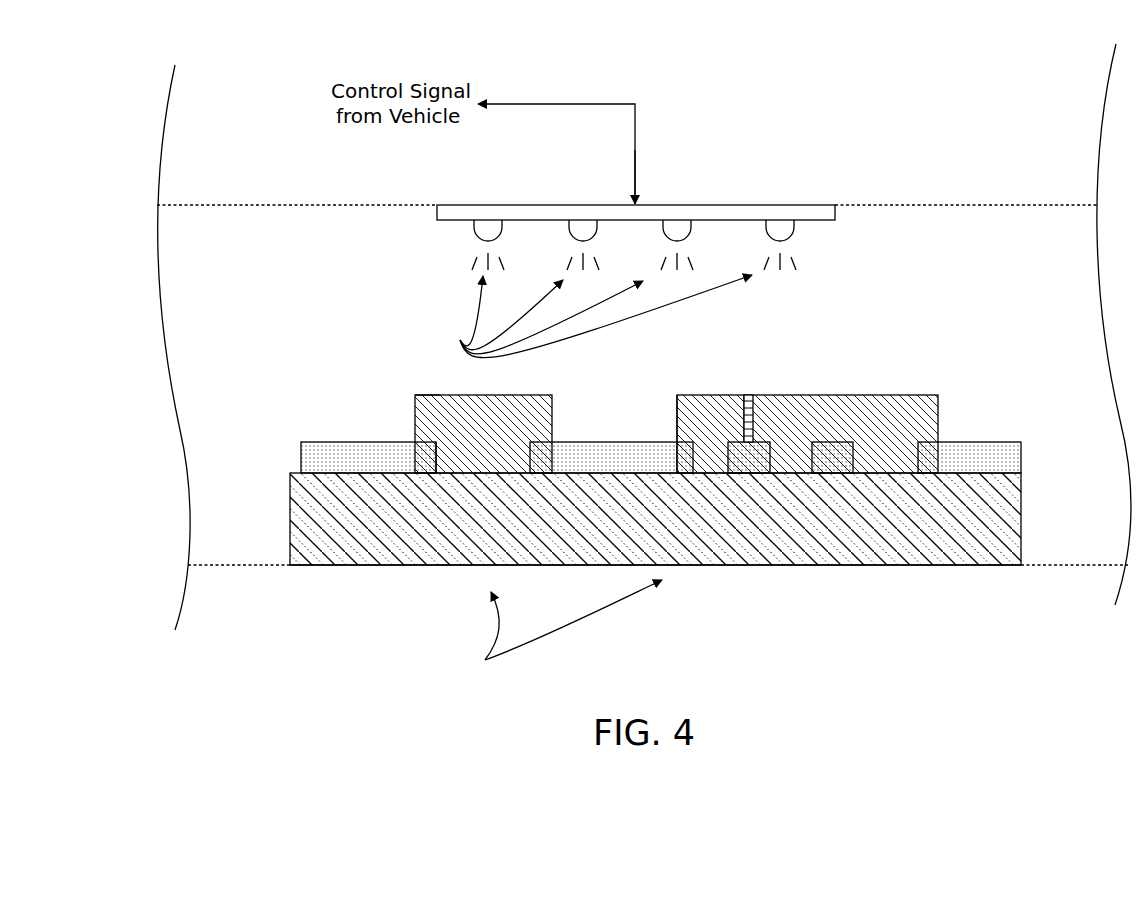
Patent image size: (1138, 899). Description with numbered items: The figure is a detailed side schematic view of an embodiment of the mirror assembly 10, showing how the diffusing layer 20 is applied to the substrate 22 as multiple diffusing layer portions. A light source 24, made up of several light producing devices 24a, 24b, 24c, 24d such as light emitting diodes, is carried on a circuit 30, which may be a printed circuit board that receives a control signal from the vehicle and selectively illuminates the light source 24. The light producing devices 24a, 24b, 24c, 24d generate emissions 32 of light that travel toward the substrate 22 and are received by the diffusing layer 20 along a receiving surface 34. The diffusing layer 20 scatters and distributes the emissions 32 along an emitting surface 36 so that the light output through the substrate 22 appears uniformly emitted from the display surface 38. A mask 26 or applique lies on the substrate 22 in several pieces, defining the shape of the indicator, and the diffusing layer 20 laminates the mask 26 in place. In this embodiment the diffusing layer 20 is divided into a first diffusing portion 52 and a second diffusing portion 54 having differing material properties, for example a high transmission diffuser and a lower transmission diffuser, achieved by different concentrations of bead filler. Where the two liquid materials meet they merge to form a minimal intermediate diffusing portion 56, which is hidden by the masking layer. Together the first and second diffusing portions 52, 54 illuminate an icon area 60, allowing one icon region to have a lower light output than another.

The mirror assembly 10 is at (122, 73).
The diffusing layer 20 is at (685, 409).
The substrate 22 is at (352, 546).
The light source 24 is at (577, 219).
The light producing device 24a is at (489, 232).
The light producing device 24b is at (583, 232).
The light producing device 24c is at (677, 232).
The light producing device 24d is at (780, 232).
The mask 26 is at (322, 457).
The circuit 30 is at (437, 211).
The emissions 32 is at (460, 340).
The receiving surface 34 is at (396, 373).
The emitting surface 36 is at (447, 462).
The display surface 38 is at (478, 568).
The first diffusing portion 52 is at (510, 403).
The second diffusing portion 54 is at (707, 405).
The intermediate diffusing portion 56 is at (748, 397).
The icon area 60 is at (485, 660).